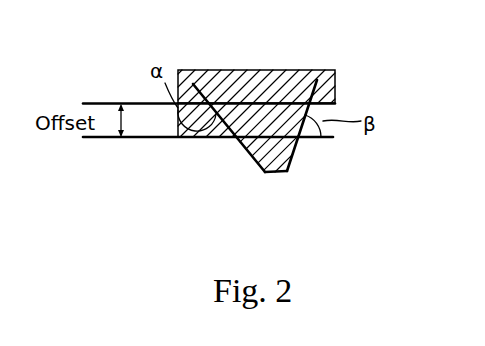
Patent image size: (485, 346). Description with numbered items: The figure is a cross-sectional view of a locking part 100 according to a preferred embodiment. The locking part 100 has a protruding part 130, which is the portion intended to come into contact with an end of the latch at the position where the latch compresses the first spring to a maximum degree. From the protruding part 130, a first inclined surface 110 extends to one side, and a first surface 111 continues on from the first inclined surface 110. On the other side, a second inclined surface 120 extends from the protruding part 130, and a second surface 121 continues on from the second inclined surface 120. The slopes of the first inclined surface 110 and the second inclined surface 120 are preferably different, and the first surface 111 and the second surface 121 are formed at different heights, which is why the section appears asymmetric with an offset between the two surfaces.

The locking part 100 is at (94, 33).
The second surface 121 is at (335, 106).
The second inclined surface 120 is at (246, 146).
The first surface 111 is at (195, 138).
The first inclined surface 110 is at (245, 151).
The protruding part 130 is at (276, 172).